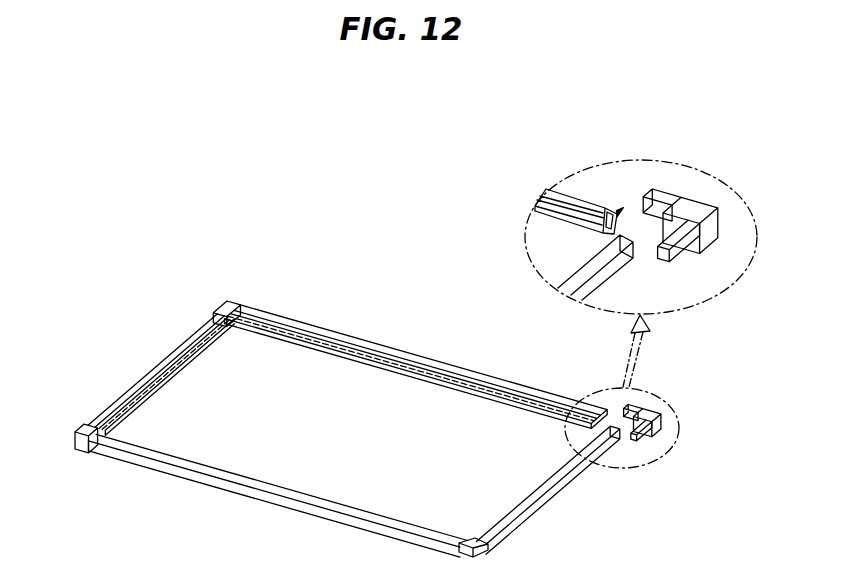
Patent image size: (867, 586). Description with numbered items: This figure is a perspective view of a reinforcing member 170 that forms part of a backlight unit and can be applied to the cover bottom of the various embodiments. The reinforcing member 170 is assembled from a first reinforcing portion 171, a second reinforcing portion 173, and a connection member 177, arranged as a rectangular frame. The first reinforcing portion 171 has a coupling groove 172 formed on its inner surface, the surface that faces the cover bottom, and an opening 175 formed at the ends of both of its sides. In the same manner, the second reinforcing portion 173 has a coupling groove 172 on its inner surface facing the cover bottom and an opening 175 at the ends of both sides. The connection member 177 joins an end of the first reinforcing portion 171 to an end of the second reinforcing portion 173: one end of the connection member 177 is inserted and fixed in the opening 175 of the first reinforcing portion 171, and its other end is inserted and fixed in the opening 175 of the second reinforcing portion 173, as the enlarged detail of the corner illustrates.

The reinforcing member 170 is at (163, 197).
The first reinforcing portion 171 is at (572, 200).
The coupling groove 172 is at (175, 336).
The second reinforcing portion 173 is at (130, 390).
The opening 175 is at (617, 217).
The connection member 177 is at (698, 213).